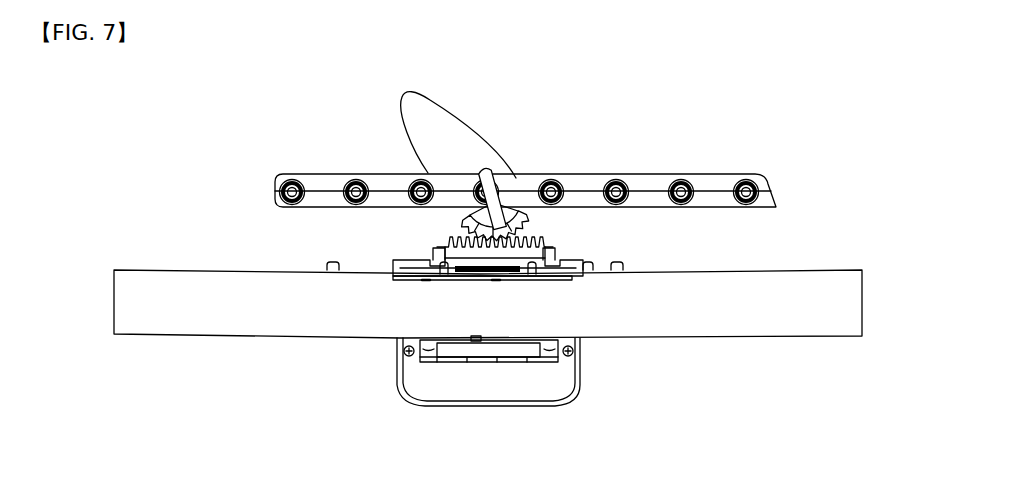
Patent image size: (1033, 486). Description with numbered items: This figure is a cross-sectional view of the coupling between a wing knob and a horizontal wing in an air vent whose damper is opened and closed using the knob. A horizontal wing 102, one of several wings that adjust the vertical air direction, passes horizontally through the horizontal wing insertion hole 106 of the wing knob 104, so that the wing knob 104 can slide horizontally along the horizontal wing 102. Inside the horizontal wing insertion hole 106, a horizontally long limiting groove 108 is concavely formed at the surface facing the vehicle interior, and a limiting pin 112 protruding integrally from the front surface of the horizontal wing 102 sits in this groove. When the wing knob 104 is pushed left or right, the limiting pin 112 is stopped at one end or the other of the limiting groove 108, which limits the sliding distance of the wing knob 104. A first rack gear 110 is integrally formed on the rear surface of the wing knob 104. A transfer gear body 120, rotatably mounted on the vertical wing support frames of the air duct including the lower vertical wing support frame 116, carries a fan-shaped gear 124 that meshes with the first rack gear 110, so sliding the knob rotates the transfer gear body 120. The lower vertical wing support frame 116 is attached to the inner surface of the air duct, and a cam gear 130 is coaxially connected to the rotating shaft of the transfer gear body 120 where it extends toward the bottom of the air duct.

The horizontal wing 102 is at (636, 323).
The wing knob 104 is at (548, 385).
The horizontal wing insertion hole 106 is at (412, 276).
The limiting groove 108 is at (497, 345).
The first rack gear 110 is at (540, 240).
The limiting pin 112 is at (470, 341).
The lower vertical wing support frame 116 is at (658, 183).
The transfer gear body 120 is at (511, 195).
The fan-shaped gear 124 is at (533, 228).
The cam gear 130 is at (448, 128).